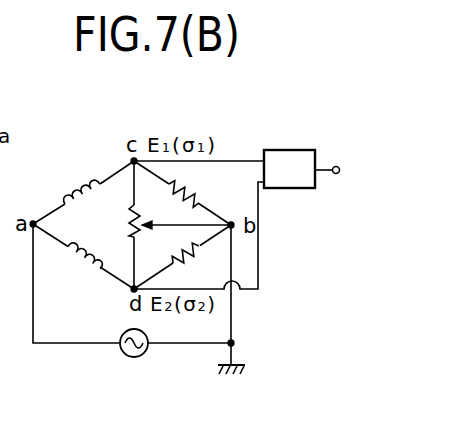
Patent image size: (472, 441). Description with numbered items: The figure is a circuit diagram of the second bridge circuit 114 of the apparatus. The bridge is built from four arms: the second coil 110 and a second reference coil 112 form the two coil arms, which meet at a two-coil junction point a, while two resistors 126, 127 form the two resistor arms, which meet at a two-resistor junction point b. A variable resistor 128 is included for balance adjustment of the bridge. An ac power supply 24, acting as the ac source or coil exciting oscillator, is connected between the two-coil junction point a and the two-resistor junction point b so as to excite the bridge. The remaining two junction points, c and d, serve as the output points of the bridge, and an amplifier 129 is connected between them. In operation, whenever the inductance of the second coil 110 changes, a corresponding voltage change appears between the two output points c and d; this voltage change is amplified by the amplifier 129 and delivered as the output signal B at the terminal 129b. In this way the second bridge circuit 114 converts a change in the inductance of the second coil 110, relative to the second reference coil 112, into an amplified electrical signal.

The second bridge circuit 114 is at (99, 162).
The second coil 110 is at (78, 186).
The second reference coil 112 is at (74, 265).
The resistor 126 is at (199, 196).
The resistor 127 is at (199, 255).
The variable resistor 128 is at (146, 206).
The amplifier 129 is at (294, 150).
The output terminal B of amplifier 129b is at (338, 166).
The ac power supply 24 is at (136, 357).